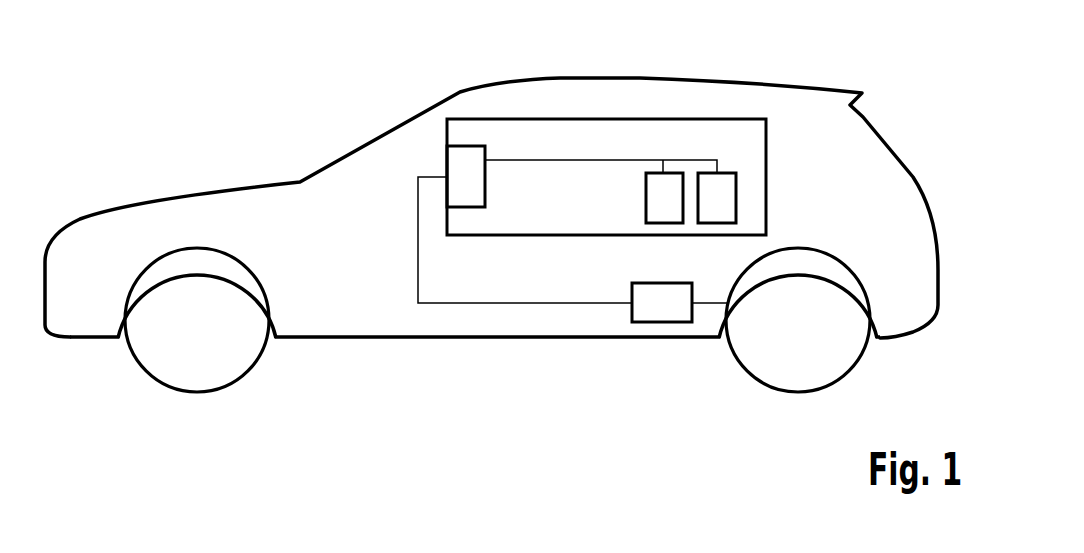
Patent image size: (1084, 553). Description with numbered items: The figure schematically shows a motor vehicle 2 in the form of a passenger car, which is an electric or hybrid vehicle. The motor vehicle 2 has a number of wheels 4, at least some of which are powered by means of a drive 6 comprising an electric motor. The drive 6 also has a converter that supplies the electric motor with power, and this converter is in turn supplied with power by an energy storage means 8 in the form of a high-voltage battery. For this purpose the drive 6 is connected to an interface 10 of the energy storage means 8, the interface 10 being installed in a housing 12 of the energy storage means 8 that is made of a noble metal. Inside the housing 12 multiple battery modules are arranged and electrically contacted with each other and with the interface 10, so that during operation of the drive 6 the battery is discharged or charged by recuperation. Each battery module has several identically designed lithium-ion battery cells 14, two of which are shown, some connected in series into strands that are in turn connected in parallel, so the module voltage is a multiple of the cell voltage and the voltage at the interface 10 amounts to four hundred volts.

The motor vehicle 2 is at (817, 90).
The wheels 4 is at (195, 392).
The drive 6 is at (657, 322).
The energy storage means 8 is at (606, 132).
The interface 10 is at (463, 145).
The housing 12 is at (580, 118).
The battery cells 14 is at (645, 197).